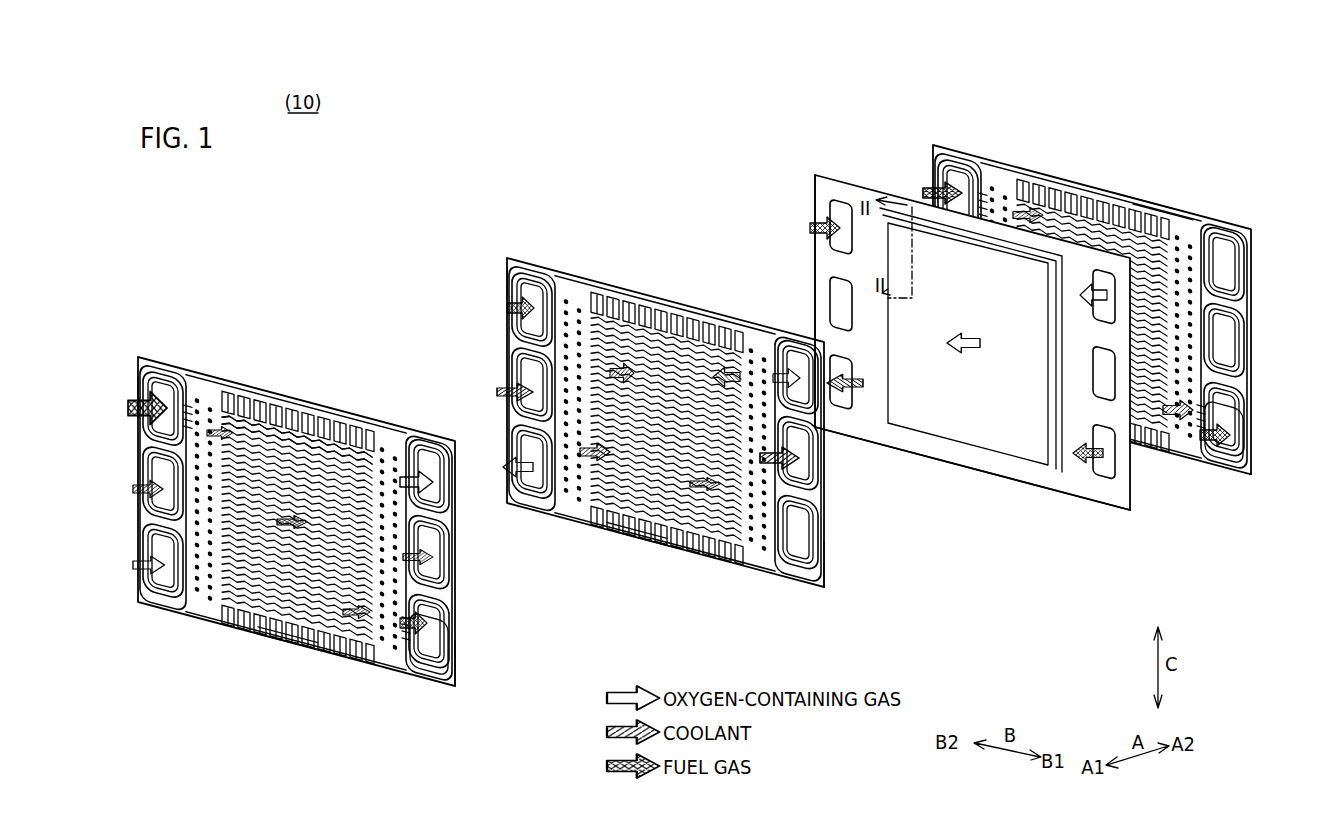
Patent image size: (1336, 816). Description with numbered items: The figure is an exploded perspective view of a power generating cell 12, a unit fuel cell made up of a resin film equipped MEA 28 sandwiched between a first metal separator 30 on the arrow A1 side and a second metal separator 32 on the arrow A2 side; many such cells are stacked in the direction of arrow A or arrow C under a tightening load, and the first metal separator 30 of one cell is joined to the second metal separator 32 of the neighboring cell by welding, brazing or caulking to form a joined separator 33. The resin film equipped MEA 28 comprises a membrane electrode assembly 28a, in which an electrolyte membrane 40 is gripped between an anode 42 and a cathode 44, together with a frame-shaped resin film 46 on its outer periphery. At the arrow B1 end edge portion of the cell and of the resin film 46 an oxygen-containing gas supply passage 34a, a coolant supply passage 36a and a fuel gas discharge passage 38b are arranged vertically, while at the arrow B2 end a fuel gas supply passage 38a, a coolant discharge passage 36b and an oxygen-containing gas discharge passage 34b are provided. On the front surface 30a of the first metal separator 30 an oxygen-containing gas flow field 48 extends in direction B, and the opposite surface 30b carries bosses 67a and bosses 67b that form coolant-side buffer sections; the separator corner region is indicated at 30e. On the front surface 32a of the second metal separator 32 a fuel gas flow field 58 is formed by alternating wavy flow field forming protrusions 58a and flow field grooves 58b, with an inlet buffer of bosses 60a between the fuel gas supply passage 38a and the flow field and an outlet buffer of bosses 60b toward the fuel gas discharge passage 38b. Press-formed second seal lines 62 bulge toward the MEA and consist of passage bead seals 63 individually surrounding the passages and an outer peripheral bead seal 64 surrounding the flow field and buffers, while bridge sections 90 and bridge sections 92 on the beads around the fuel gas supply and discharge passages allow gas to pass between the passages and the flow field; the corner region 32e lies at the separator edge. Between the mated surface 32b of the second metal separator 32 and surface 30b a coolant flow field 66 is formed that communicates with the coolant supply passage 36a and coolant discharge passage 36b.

The power generating cell 12 is at (905, 105).
The resin film equipped MEA 28 is at (813, 162).
The membrane electrode assembly 28a is at (1005, 450).
The first metal separator 30 is at (505, 250).
The front surface of the first metal separator 30a is at (650, 545).
The surface of the first metal separator 30b is at (625, 533).
The first separator corner 30e is at (520, 272).
The second metal separator 32 is at (140, 352).
The front surface of the second metal separator 32a is at (265, 640).
The surface of the second metal separator 32b is at (281, 650).
The second separator corner 32e is at (138, 385).
The joined separator 33 is at (342, 296).
The oxygen-containing gas supply passage 34a is at (432, 455).
The oxygen-containing gas discharge passage 34b is at (160, 552).
The coolant supply passage 36a is at (440, 582).
The coolant discharge passage 36b is at (168, 603).
The fuel gas supply passage 38a is at (967, 205).
The fuel gas discharge passage 38b is at (432, 660).
The electrolyte membrane 40 is at (988, 437).
The anode 42 is at (1052, 470).
The cathode 44 is at (948, 425).
The resin film 46 is at (840, 190).
The oxygen-containing gas flow field 48 is at (657, 325).
The fuel gas flow field 58 is at (330, 360).
The flow field forming protrusions 58a is at (258, 470).
The flow field grooves 58b is at (288, 470).
The bosses 60a is at (213, 606).
The bosses 60b is at (402, 630).
The second seal lines 62 is at (525, 680).
The bead seals 63 is at (140, 440).
The bead seal 64 is at (458, 665).
The coolant flow field 66 is at (625, 330).
The bosses 67a is at (753, 555).
The bosses 67b is at (578, 505).
The bridge sections 90 is at (186, 400).
The bridge sections 92 is at (412, 640).